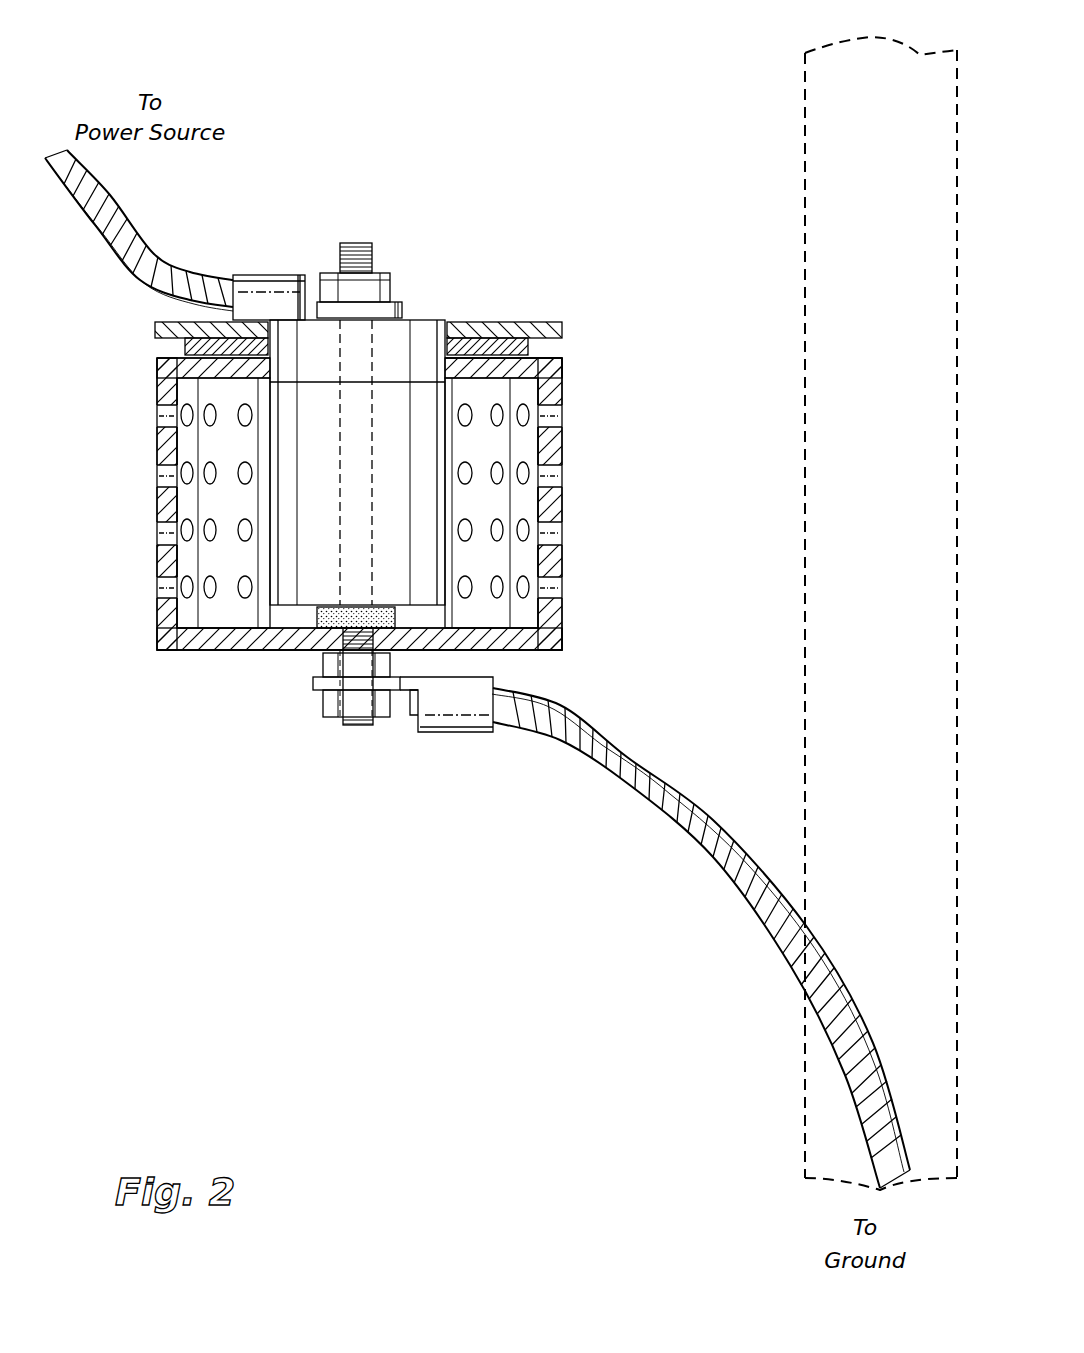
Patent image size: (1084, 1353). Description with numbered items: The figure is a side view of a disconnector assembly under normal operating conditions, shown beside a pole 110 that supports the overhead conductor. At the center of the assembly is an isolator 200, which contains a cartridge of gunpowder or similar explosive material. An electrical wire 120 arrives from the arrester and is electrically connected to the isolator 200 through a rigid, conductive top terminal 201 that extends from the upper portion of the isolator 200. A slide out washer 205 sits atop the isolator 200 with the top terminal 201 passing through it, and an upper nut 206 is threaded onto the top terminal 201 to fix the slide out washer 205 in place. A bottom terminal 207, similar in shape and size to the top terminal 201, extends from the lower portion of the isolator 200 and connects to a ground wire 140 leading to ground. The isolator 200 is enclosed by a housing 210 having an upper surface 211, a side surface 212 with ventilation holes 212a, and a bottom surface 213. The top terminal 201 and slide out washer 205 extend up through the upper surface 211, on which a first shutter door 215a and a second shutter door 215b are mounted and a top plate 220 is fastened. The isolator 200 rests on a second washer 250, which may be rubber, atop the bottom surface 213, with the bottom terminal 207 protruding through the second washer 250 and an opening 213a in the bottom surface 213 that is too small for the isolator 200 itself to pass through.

The pole 110 is at (790, 196).
The electrical wire 120 is at (165, 253).
The ground wire 140 is at (690, 787).
The isolator 200 is at (312, 565).
The top terminal 201 is at (338, 248).
The slide out washer 205 is at (425, 337).
The upper nut 206 is at (385, 285).
The bottom terminal 207 is at (357, 365).
The housing 210 is at (112, 432).
The upper surface 211 is at (548, 358).
The side surface 212 is at (357, 503).
The ventilation holes 212a is at (160, 478).
The bottom surface 213 is at (535, 652).
The opening 213a is at (338, 652).
The first shutter door 215a is at (500, 340).
The second shutter door 215b is at (187, 333).
The top plate 220 is at (535, 328).
The second washer 250 is at (318, 612).